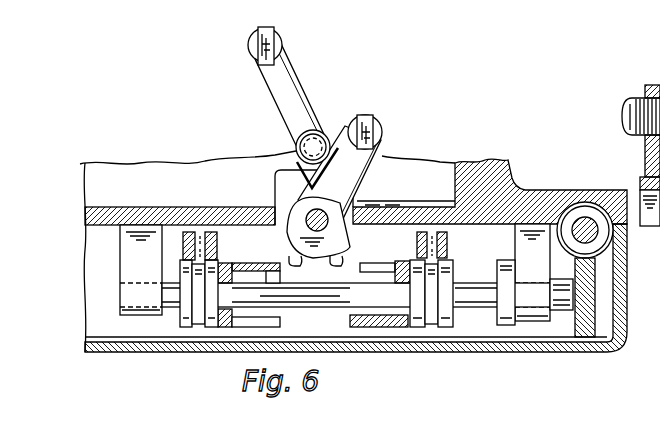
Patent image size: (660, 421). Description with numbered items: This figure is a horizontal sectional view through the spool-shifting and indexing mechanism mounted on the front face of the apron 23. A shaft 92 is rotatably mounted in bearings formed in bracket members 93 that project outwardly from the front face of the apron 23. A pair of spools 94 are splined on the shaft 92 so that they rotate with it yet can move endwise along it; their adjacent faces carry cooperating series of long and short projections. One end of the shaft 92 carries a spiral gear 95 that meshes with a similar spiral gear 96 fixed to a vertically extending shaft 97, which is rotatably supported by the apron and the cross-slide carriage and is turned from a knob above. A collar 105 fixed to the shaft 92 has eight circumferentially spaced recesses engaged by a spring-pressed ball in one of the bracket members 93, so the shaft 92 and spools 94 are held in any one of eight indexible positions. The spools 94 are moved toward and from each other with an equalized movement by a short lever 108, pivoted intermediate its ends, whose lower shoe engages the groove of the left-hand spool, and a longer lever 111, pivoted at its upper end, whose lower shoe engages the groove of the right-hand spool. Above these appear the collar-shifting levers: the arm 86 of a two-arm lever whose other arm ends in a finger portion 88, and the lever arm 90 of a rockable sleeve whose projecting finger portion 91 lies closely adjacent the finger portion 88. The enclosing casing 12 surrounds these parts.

The housing casing 12 is at (627, 306).
The apron 23 is at (515, 188).
The arm 86 is at (278, 106).
The finger portion 88 is at (386, 247).
The lever arm 90 is at (348, 175).
The finger portion 91 is at (284, 256).
The shaft 92 is at (475, 310).
The bracket members 93 is at (145, 315).
The spools 94 is at (215, 327).
The spiral gear 95 is at (585, 333).
The spiral gear 96 is at (578, 212).
The vertically extending shaft 97 is at (589, 217).
The collar 105 is at (505, 325).
The short lever 108 is at (212, 232).
The longer lever 111 is at (418, 232).